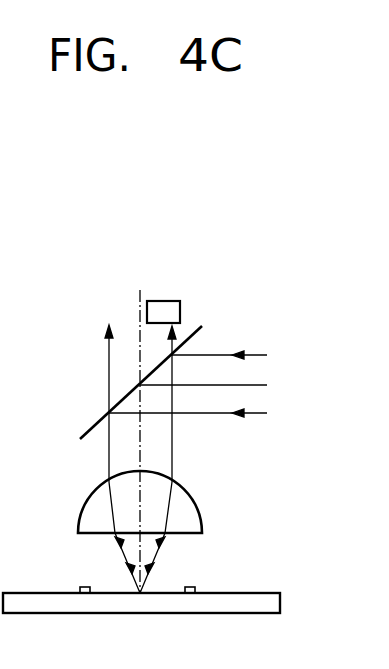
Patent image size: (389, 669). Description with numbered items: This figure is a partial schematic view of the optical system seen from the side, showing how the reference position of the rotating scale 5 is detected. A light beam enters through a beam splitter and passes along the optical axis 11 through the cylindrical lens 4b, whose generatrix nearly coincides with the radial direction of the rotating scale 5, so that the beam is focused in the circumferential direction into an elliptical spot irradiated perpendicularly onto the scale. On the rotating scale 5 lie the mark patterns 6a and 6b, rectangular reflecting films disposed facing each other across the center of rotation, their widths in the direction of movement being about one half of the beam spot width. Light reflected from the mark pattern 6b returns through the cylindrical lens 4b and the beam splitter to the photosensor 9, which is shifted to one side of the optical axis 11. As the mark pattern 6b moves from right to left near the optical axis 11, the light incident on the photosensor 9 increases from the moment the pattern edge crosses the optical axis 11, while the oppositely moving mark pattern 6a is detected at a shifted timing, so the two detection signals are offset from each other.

The optical axis 11 is at (138, 303).
The photosensor 9 is at (181, 303).
The cylindrical lens 4b is at (190, 500).
The rotating scale 5 is at (243, 593).
The mark pattern 6a is at (190, 587).
The mark pattern 6b is at (83, 587).